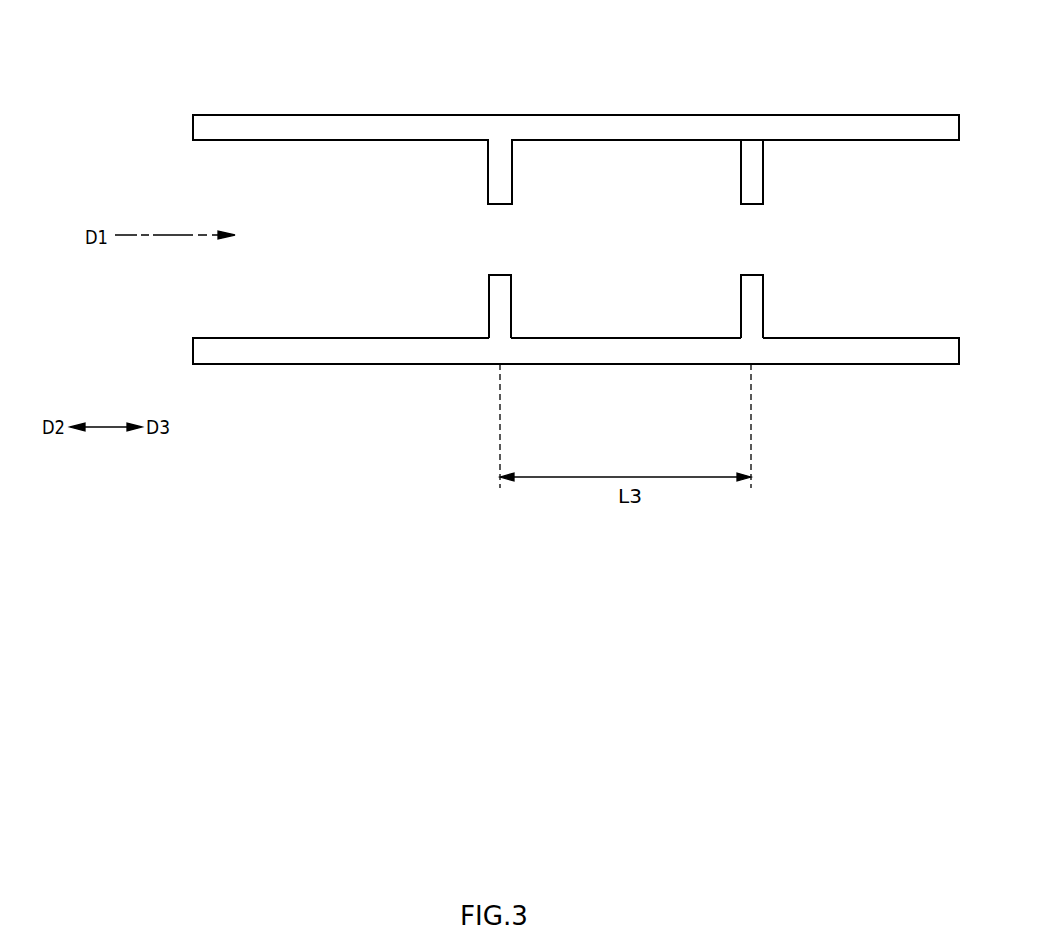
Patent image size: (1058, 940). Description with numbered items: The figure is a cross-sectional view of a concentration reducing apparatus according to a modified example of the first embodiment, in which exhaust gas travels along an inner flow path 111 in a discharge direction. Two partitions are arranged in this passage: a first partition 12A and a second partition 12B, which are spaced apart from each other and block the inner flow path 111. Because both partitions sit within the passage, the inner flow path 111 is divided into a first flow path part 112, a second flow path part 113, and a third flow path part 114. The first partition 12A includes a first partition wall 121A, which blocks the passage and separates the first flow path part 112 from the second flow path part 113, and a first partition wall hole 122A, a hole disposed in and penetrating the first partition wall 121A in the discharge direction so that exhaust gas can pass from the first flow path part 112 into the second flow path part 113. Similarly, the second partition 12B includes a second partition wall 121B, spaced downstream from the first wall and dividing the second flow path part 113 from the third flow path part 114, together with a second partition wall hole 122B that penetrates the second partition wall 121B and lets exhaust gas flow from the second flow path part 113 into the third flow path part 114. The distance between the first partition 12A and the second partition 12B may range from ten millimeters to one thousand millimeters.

The first partition 12A is at (402, 15).
The first partition wall 121A is at (503, 173).
The first partition wall hole 122A is at (502, 231).
The second partition 12B is at (652, 15).
The second partition wall 121B is at (753, 173).
The second partition wall hole 122B is at (752, 231).
The inner flow path 111 is at (470, 408).
The first flow path part 112 is at (395, 256).
The second flow path part 113 is at (596, 226).
The third flow path part 114 is at (866, 236).